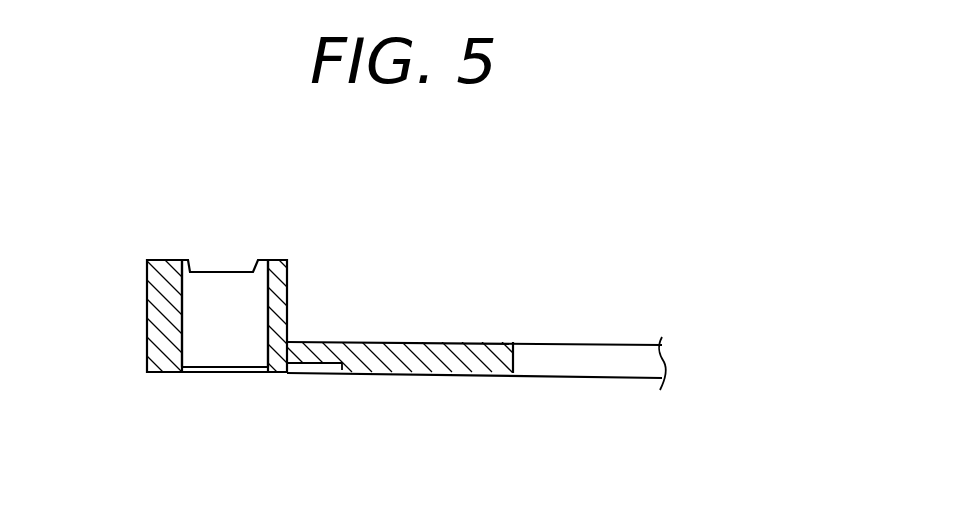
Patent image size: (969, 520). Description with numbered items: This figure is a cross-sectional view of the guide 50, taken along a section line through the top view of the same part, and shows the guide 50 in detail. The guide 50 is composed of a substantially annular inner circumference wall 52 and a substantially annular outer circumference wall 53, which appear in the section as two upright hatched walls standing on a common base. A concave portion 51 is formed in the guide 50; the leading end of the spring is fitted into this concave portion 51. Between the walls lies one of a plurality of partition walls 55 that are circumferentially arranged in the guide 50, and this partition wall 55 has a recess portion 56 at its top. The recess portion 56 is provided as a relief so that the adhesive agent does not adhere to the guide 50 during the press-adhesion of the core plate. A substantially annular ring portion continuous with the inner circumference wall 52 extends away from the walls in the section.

The guide 50 is at (488, 197).
The concave portion 51 is at (320, 375).
The inner circumference wall 52 is at (286, 308).
The outer circumference wall 53 is at (158, 313).
The partition wall 55 is at (238, 280).
The recess portion 56 is at (205, 268).